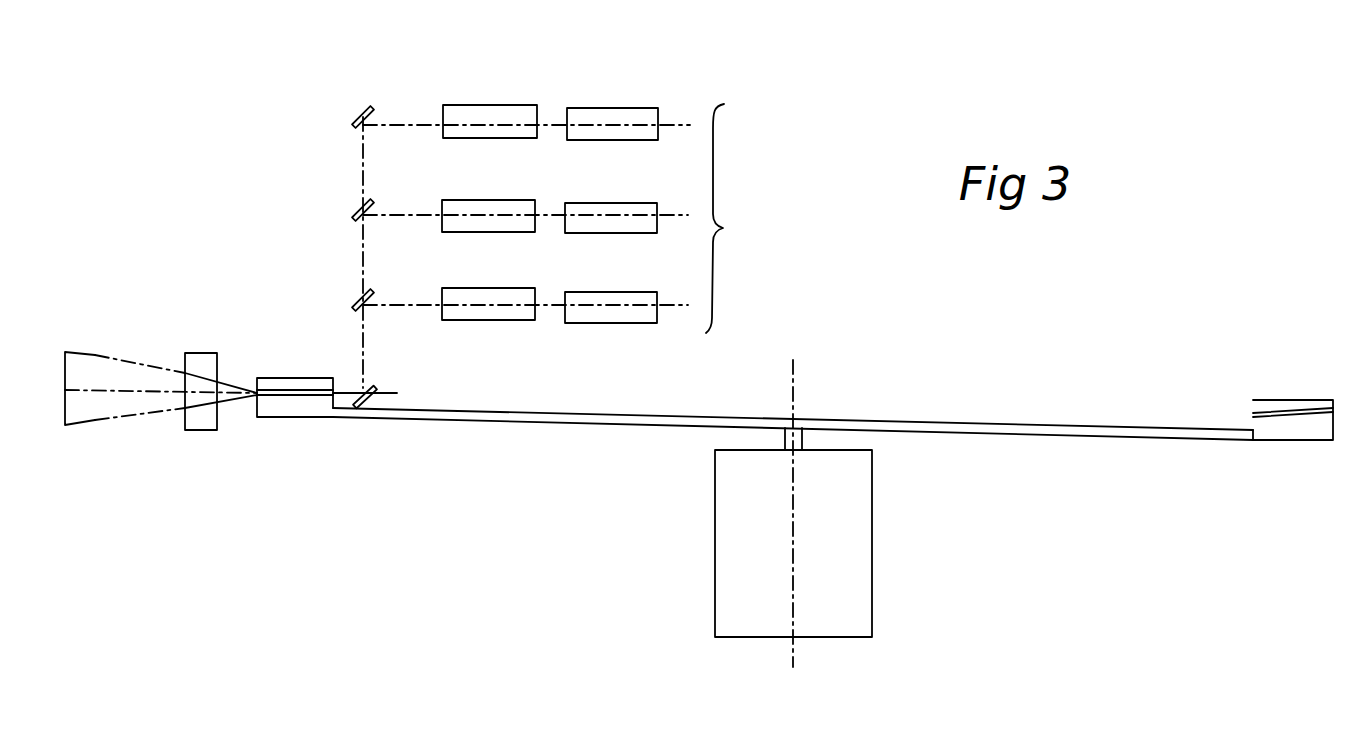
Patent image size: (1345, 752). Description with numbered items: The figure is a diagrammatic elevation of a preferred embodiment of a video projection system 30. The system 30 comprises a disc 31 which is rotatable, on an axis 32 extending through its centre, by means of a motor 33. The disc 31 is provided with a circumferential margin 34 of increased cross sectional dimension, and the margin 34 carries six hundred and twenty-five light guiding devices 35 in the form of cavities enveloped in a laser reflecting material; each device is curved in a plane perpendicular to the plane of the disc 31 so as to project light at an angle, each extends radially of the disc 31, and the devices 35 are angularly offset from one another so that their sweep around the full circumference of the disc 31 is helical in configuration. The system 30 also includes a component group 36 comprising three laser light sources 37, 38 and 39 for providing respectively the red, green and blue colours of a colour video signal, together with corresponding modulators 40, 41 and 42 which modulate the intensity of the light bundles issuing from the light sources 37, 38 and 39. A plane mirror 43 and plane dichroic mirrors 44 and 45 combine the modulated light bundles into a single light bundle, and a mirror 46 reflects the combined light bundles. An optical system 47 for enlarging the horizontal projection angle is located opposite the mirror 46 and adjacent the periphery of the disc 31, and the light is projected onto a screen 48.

The video projection system 30 is at (882, 289).
The disc 31 is at (1078, 437).
The axis 32 is at (795, 373).
The motor 33 is at (872, 560).
The circumferential margin 34 is at (335, 369).
The light guiding devices 35 is at (320, 398).
The component group 36 is at (742, 218).
The laser light source 37 is at (615, 327).
The laser light source 38 is at (603, 237).
The laser light source 39 is at (602, 142).
The modulator 40 is at (482, 322).
The modulator 41 is at (488, 233).
The modulator 42 is at (488, 140).
The plane mirror 43 is at (363, 107).
The plane dichroic mirror 44 is at (352, 200).
The plane dichroic mirror 45 is at (358, 295).
The mirror 46 is at (380, 396).
The optical system 47 is at (197, 353).
The screen 48 is at (72, 372).